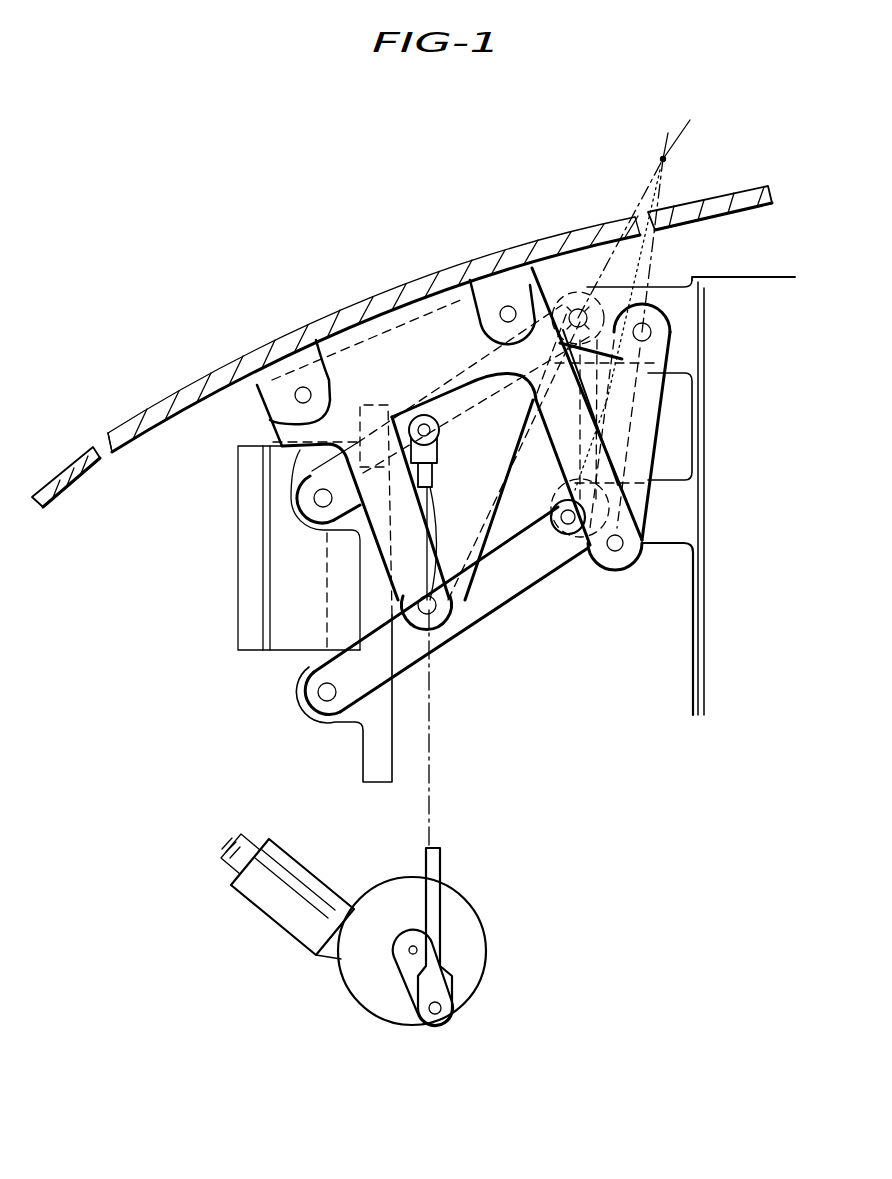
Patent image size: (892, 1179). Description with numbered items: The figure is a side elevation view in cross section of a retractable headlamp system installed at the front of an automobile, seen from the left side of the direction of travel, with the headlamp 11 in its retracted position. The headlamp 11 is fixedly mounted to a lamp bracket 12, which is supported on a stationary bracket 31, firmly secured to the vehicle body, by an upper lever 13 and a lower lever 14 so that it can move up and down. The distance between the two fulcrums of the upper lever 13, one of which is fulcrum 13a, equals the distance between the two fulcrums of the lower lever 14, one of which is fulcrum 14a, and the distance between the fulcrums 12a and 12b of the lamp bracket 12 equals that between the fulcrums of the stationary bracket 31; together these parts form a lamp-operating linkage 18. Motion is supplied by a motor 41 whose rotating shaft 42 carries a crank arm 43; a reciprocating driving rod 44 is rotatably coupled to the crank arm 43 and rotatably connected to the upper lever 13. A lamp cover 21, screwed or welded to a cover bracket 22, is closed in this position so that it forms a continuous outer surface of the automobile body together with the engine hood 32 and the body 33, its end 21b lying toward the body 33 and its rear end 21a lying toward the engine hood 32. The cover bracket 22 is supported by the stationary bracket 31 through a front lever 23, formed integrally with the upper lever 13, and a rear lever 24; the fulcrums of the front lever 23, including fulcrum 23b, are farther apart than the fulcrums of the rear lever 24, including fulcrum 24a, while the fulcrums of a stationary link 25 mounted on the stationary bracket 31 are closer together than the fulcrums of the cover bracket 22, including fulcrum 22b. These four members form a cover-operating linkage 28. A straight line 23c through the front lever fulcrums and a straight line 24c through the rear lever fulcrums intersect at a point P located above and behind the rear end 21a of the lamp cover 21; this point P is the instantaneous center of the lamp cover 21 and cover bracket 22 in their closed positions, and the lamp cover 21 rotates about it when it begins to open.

The headlamp 11 is at (240, 607).
The lamp bracket 12 is at (366, 738).
The fulcrum of lamp bracket 12a is at (314, 498).
The fulcrum of lamp bracket 12b is at (318, 692).
The upper lever 13 is at (305, 457).
The fulcrum of upper lever 13a is at (578, 310).
The lower lever 14 is at (485, 600).
The fulcrum of lower lever 14a is at (572, 538).
The lamp-operating linkage 18 is at (412, 684).
The lamp cover 21 is at (216, 374).
The rear end of lamp cover 21a is at (620, 218).
The front end of panel 21b is at (109, 430).
The cover bracket 22 is at (358, 350).
The fulcrum of cover bracket 22b is at (615, 553).
The front lever 23 is at (509, 502).
The fulcrum of front lever 23b is at (433, 630).
The straight line 23c is at (641, 166).
The rear lever 24 is at (653, 434).
The fulcrum of rear lever 24a is at (660, 337).
The straight line 24c is at (672, 163).
The stationary link 25 is at (652, 264).
The cover-operating linkage 28 is at (677, 415).
The stationary bracket 31 is at (668, 542).
The engine hood 32 is at (744, 192).
The body 33 is at (69, 463).
The motor 41 is at (332, 977).
The rotating shaft 42 is at (408, 954).
The crank arm 43 is at (411, 1002).
The reciprocating driving rod 44 is at (441, 862).
The intersection point P is at (691, 111).